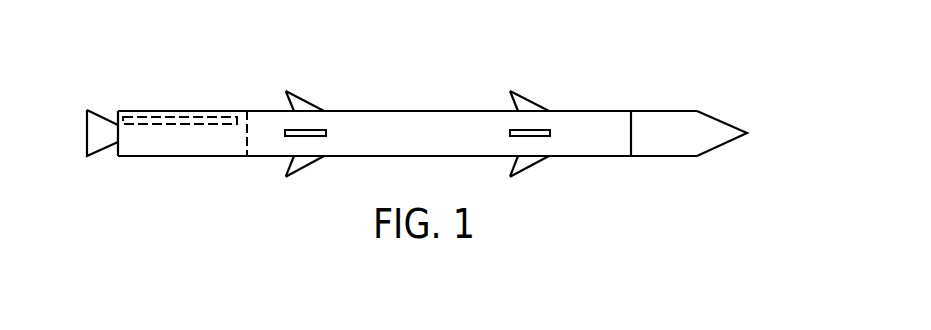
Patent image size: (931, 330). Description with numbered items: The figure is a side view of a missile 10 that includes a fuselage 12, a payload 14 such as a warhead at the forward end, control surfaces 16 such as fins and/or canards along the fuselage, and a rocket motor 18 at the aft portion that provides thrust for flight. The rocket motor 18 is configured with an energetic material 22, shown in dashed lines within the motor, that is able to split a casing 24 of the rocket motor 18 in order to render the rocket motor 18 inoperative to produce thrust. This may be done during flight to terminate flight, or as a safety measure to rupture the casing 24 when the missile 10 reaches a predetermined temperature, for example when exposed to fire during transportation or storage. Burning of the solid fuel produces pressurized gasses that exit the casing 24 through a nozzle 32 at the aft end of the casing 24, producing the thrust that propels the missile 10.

The missile 10 is at (435, 110).
The fuselage 12 is at (410, 115).
The payload 14 is at (667, 154).
The control surfaces 16 is at (522, 97).
The rocket motor 18 is at (135, 110).
The energetic material 22 is at (165, 113).
The casing 24 is at (163, 157).
The nozzle 32 is at (89, 133).